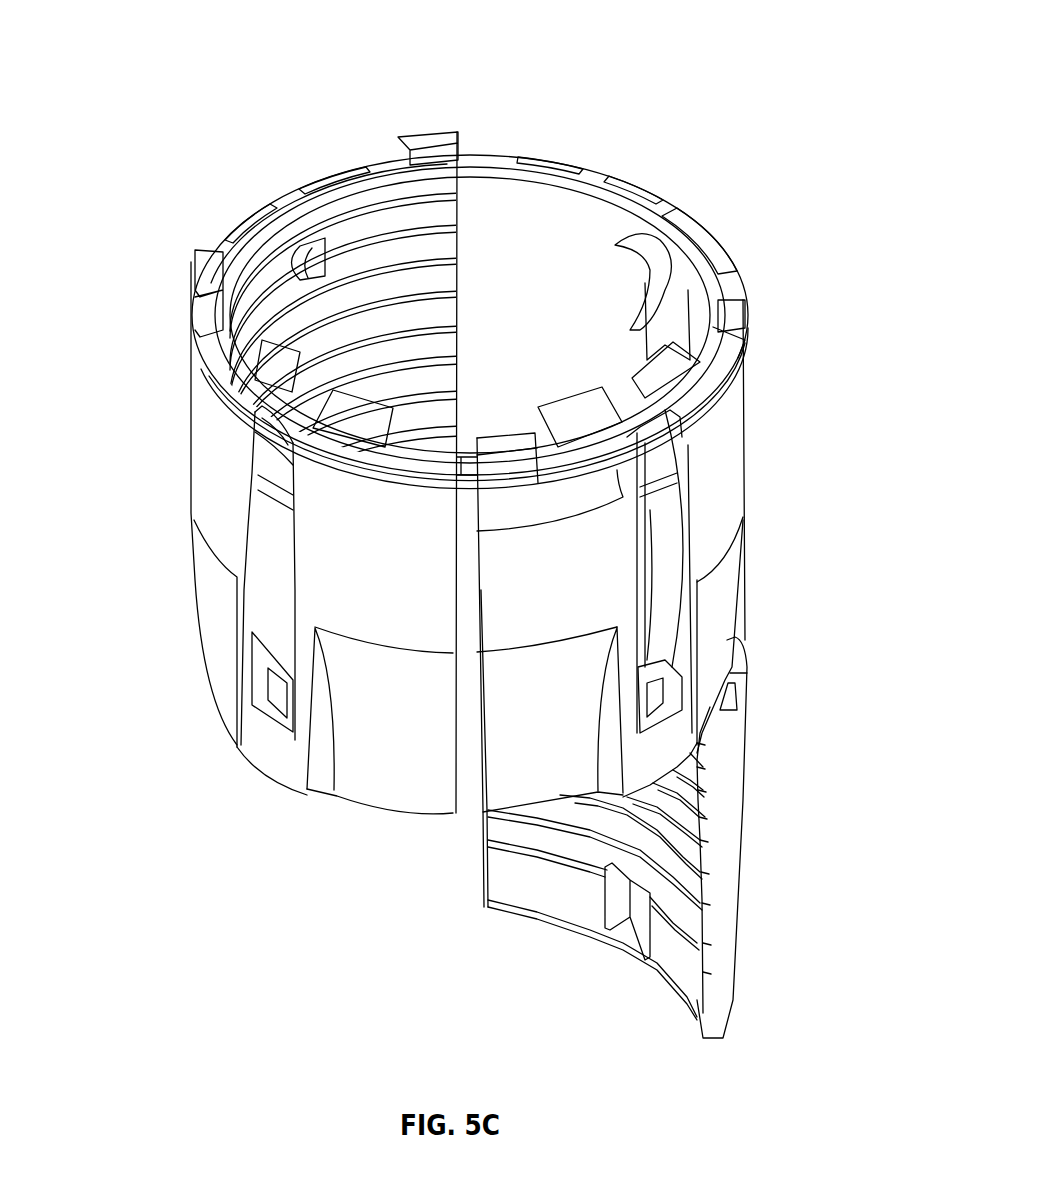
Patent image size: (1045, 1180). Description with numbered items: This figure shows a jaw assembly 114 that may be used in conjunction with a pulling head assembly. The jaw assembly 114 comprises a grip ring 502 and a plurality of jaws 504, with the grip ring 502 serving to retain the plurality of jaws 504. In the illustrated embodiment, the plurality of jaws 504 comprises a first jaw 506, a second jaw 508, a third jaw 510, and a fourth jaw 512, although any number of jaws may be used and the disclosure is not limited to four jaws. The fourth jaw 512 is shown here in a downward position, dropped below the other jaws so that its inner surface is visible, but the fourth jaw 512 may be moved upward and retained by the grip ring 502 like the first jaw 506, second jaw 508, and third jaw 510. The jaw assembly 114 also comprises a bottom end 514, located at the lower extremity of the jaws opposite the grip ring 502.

The jaw assembly 114 is at (686, 64).
The grip ring 502 is at (592, 165).
The plurality of jaws 504 is at (752, 528).
The first jaw 506 is at (191, 290).
The second jaw 508 is at (192, 527).
The third jaw 510 is at (523, 778).
The fourth jaw 512 is at (745, 807).
The bottom end 514 is at (262, 796).